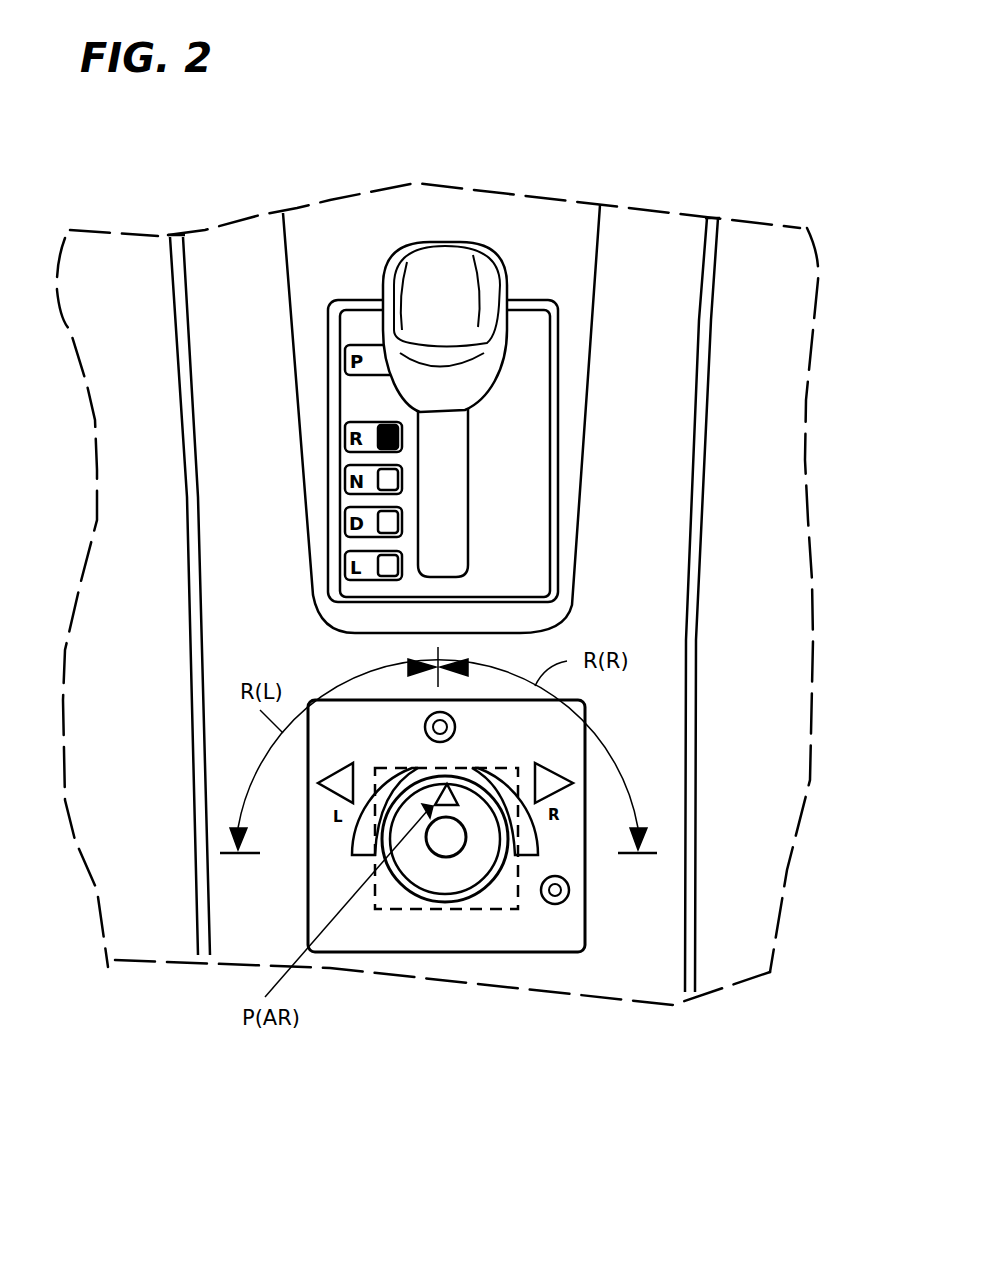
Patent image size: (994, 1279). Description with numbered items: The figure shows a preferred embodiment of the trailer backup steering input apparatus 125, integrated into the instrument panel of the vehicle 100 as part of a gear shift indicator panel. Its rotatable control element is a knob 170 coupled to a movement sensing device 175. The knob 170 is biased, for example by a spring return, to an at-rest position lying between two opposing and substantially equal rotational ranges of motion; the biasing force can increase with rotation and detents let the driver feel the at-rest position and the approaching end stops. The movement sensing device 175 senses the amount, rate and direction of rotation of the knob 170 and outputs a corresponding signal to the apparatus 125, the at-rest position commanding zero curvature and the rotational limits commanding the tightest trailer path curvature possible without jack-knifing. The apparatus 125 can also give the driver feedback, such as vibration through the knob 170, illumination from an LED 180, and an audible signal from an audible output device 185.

The vehicle 100 is at (580, 128).
The trailer backup steering input apparatus 125 is at (501, 948).
The knob 170 is at (447, 872).
The movement sensing device 175 is at (405, 908).
The LED 180 is at (456, 727).
The audible output device 185 is at (569, 893).